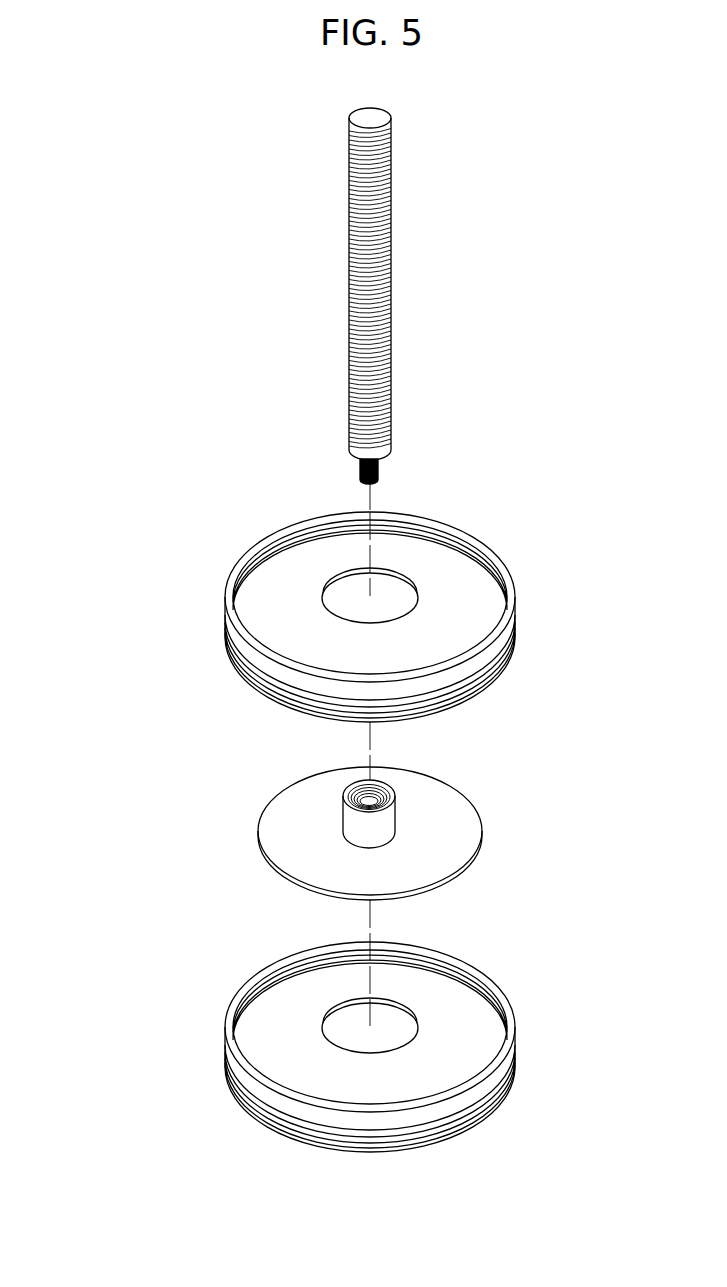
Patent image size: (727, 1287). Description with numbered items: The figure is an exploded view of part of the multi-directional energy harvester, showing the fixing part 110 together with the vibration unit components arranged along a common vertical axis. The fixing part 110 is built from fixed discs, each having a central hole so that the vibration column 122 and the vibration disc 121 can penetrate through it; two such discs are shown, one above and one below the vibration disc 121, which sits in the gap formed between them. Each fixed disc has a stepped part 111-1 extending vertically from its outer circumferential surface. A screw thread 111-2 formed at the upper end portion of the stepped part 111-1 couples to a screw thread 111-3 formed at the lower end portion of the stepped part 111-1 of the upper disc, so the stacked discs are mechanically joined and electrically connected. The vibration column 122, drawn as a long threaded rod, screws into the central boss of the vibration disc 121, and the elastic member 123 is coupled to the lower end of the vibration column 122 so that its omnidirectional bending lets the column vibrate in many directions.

The fixing part 110 is at (215, 615).
The stepped part 111-1 is at (235, 1067).
The screw thread 111-2 is at (268, 993).
The screw thread 111-3 is at (300, 1137).
The vibration disc 121 is at (247, 812).
The vibration column 122 is at (338, 259).
The elastic member 123 is at (380, 466).